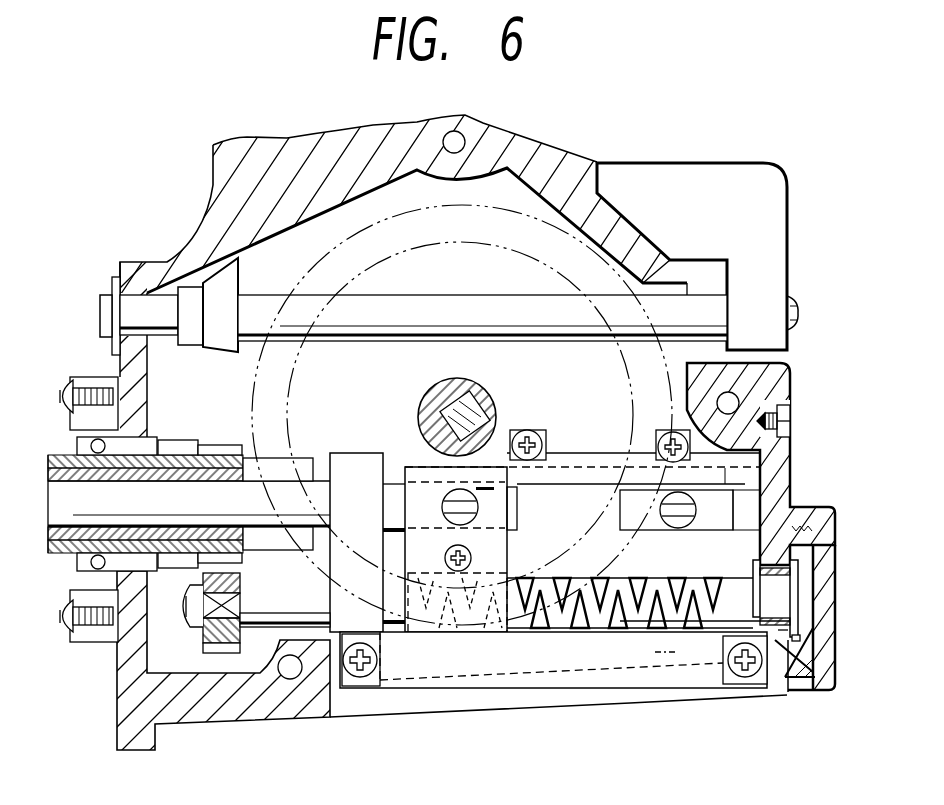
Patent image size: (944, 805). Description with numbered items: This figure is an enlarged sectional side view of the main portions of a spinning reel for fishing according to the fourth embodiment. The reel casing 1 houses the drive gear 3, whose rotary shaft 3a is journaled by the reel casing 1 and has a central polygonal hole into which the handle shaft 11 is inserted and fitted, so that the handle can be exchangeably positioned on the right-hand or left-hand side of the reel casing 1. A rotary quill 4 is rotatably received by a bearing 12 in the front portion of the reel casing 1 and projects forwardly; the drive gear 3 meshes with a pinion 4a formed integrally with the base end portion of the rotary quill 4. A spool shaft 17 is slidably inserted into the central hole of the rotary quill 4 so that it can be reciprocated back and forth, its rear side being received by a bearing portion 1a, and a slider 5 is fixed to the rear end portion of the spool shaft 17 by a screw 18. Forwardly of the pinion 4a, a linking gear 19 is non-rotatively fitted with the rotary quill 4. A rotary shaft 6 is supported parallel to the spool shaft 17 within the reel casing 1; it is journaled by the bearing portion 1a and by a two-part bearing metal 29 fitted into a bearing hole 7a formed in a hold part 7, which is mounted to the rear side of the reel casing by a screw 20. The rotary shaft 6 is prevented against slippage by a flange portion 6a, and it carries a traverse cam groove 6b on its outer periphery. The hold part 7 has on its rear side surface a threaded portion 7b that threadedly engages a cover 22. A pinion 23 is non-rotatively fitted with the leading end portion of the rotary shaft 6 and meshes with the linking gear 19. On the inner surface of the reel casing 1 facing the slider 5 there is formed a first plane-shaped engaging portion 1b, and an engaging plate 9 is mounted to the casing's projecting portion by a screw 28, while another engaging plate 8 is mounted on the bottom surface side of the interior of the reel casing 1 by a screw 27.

The reel casing 1 is at (570, 178).
The bearing portion 1a is at (332, 452).
The first plane-shaped engaging portion 1b is at (750, 497).
The drive gear 3 is at (507, 205).
The rotary shaft 3a is at (445, 377).
The rotary quill 4 is at (170, 452).
The pinion 4a is at (262, 456).
The slider 5 is at (411, 458).
The rotary shaft 6 is at (575, 634).
The flange portion 6a is at (800, 632).
The traverse cam groove 6b is at (593, 614).
The hold part 7 is at (792, 468).
The bearing hole 7a is at (800, 590).
The threaded portion 7b is at (812, 694).
The engaging plate 8 is at (651, 697).
The engaging plate 9 is at (603, 453).
The handle shaft 11 is at (480, 486).
The bearing 12 is at (77, 443).
The spool shaft 17 is at (388, 482).
The screw 18 is at (480, 502).
The linking gear 19 is at (213, 442).
The screw 20 is at (792, 416).
The cover 22 is at (823, 692).
The pinion 23 is at (220, 655).
The screw 27 is at (738, 678).
The screw 28 is at (552, 432).
The two-part bearing metal 29 is at (783, 674).